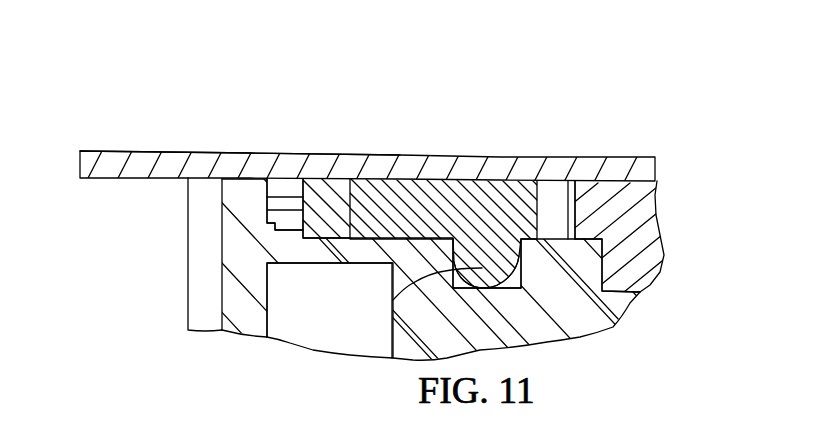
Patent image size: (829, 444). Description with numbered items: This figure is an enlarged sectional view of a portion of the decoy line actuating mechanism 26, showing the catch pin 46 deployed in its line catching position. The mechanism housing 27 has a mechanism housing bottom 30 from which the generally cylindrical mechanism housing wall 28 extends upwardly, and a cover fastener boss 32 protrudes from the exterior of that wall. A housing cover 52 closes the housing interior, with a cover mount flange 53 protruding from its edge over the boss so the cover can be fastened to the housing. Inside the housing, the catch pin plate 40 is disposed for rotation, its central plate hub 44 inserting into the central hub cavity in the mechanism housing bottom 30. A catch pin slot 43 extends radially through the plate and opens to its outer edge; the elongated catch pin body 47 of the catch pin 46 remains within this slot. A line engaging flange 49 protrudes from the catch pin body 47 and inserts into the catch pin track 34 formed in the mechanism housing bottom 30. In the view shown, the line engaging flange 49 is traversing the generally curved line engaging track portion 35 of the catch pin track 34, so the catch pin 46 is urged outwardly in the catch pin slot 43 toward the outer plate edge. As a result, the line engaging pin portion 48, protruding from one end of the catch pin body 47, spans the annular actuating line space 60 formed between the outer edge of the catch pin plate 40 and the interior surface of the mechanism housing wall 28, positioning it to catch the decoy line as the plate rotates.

The decoy line actuating mechanism 26 is at (104, 44).
The mechanism housing 27 is at (210, 299).
The mechanism housing wall 28 is at (235, 205).
The mechanism housing bottom 30 is at (577, 195).
The cover fastener boss 32 is at (200, 268).
The catch pin track 34 is at (440, 294).
The line engaging track portion 35 is at (513, 273).
The catch pin plate 40 is at (600, 170).
The catch pin slot 43 is at (352, 197).
The central plate hub 44 is at (632, 232).
The catch pin 46 is at (405, 168).
The catch pin body 47 is at (513, 195).
The line engaging pin portion 48 is at (303, 195).
The line engaging flange 49 is at (392, 318).
The housing cover 52 is at (210, 152).
The cover mount flange 53 is at (105, 150).
The annular actuating line space 60 is at (288, 177).